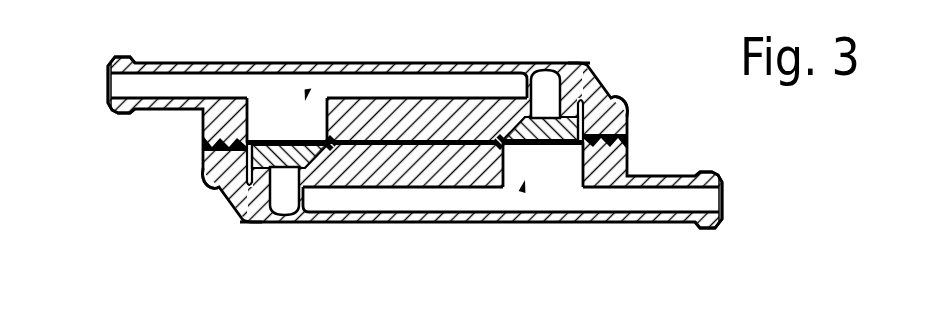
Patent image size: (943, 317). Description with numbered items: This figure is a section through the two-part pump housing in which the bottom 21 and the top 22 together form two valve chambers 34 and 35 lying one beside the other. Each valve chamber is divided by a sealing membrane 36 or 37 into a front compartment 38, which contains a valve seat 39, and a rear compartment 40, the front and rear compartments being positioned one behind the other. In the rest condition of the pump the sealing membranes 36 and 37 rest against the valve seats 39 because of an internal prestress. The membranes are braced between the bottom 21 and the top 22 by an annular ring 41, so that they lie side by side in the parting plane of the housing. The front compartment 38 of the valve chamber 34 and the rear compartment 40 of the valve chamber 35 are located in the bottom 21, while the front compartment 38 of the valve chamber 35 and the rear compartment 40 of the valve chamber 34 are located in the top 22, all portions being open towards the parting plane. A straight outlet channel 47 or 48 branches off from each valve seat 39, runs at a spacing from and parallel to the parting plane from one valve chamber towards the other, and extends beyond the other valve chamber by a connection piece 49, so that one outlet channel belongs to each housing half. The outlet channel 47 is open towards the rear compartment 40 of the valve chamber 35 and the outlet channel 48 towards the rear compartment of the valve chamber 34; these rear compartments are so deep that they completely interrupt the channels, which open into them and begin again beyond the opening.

The bottom 21 is at (438, 68).
The top 22 is at (452, 214).
The valve chamber 34 is at (522, 192).
The valve chamber 35 is at (308, 88).
The sealing membrane 36 is at (543, 74).
The sealing membrane 37 is at (294, 206).
The front compartment 38 is at (212, 190).
The valve seat 39 is at (255, 210).
The rear compartment 40 is at (567, 176).
The annular ring 41 is at (200, 182).
The outlet channel 47 is at (377, 83).
The outlet channel 48 is at (400, 198).
The connection piece 49 is at (688, 218).